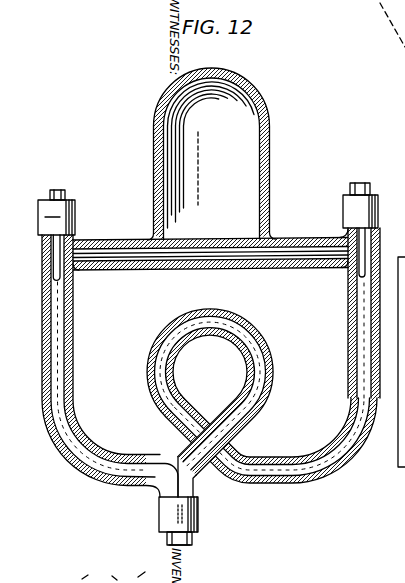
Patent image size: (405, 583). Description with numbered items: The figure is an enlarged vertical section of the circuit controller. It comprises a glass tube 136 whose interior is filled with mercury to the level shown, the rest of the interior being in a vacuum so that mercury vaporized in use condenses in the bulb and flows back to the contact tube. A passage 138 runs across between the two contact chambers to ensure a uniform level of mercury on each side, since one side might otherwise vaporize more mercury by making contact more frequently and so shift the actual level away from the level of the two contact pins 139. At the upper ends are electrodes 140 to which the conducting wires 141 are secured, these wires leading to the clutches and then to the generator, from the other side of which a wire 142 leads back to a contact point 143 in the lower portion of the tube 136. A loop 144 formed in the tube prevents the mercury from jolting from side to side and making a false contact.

The glass tube 136 is at (349, 330).
The passage 138 is at (298, 268).
The contact pins 139 is at (76, 273).
The electrodes 140 is at (73, 200).
The conducting wires 141 is at (50, 195).
The wire 142 is at (160, 535).
The contact point 143 is at (165, 498).
The loop 144 is at (245, 357).